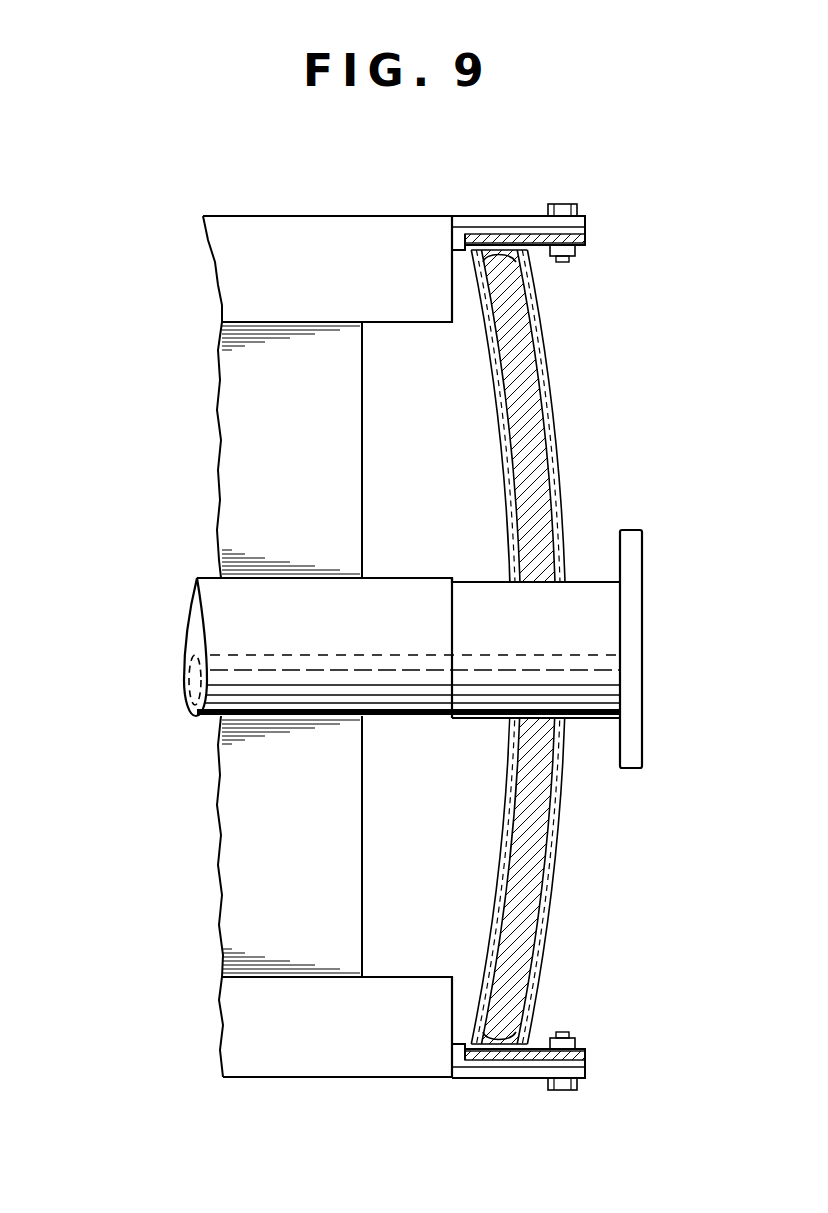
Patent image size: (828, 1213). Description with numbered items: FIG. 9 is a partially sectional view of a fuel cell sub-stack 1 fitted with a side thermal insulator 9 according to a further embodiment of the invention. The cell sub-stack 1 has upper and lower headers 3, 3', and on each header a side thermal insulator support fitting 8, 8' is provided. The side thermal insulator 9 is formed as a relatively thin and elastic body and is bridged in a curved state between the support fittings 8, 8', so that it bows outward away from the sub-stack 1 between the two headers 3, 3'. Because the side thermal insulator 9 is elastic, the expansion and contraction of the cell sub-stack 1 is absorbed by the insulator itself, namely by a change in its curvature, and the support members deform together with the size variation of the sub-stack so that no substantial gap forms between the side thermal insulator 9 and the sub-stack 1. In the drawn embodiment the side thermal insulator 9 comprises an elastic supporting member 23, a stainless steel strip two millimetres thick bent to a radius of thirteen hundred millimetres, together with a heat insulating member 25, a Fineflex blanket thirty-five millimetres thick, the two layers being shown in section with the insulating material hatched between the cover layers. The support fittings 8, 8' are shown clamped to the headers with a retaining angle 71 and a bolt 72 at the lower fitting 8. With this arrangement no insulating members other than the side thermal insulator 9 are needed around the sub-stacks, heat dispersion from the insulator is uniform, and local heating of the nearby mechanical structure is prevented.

The cell sub-stack 1 is at (150, 858).
The header 3 is at (337, 1057).
The header 3' is at (327, 234).
The side thermal insulator support fitting 8 is at (523, 1094).
The side thermal insulator support fitting 8' is at (523, 201).
The side thermal insulator 9 is at (552, 650).
The elastic supporting member 23 is at (546, 352).
The heat insulating member 25 is at (554, 497).
The retaining angle 71 is at (458, 1060).
The bolt 72 is at (575, 1045).